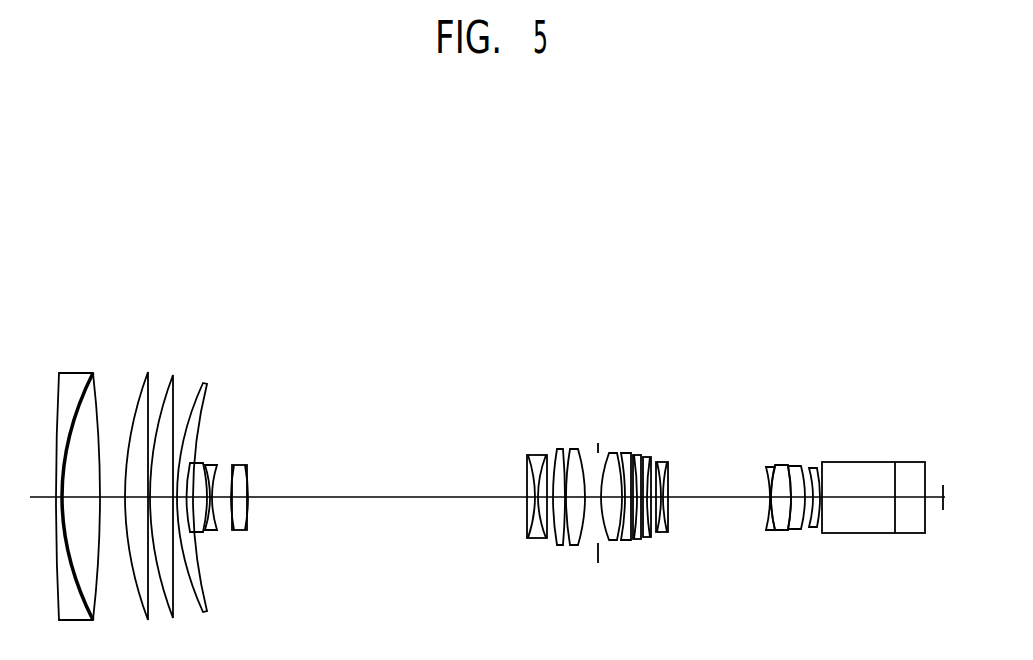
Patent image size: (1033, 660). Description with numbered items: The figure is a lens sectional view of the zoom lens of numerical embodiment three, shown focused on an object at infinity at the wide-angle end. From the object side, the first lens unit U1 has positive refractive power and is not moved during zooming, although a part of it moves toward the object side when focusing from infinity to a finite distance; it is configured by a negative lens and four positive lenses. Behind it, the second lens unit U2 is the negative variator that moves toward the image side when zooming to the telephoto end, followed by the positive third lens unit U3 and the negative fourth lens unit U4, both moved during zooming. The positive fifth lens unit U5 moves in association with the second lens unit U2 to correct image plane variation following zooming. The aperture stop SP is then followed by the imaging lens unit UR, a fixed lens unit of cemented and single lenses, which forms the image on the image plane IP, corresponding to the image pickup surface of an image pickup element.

The first lens unit U1 is at (192, 358).
The second lens unit U2 is at (197, 452).
The third lens unit U3 is at (248, 453).
The fourth lens unit U4 is at (547, 447).
The fifth lens unit U5 is at (588, 447).
The aperture stop SP is at (598, 443).
The imaging lens unit UR is at (815, 447).
The image plane IP is at (943, 485).